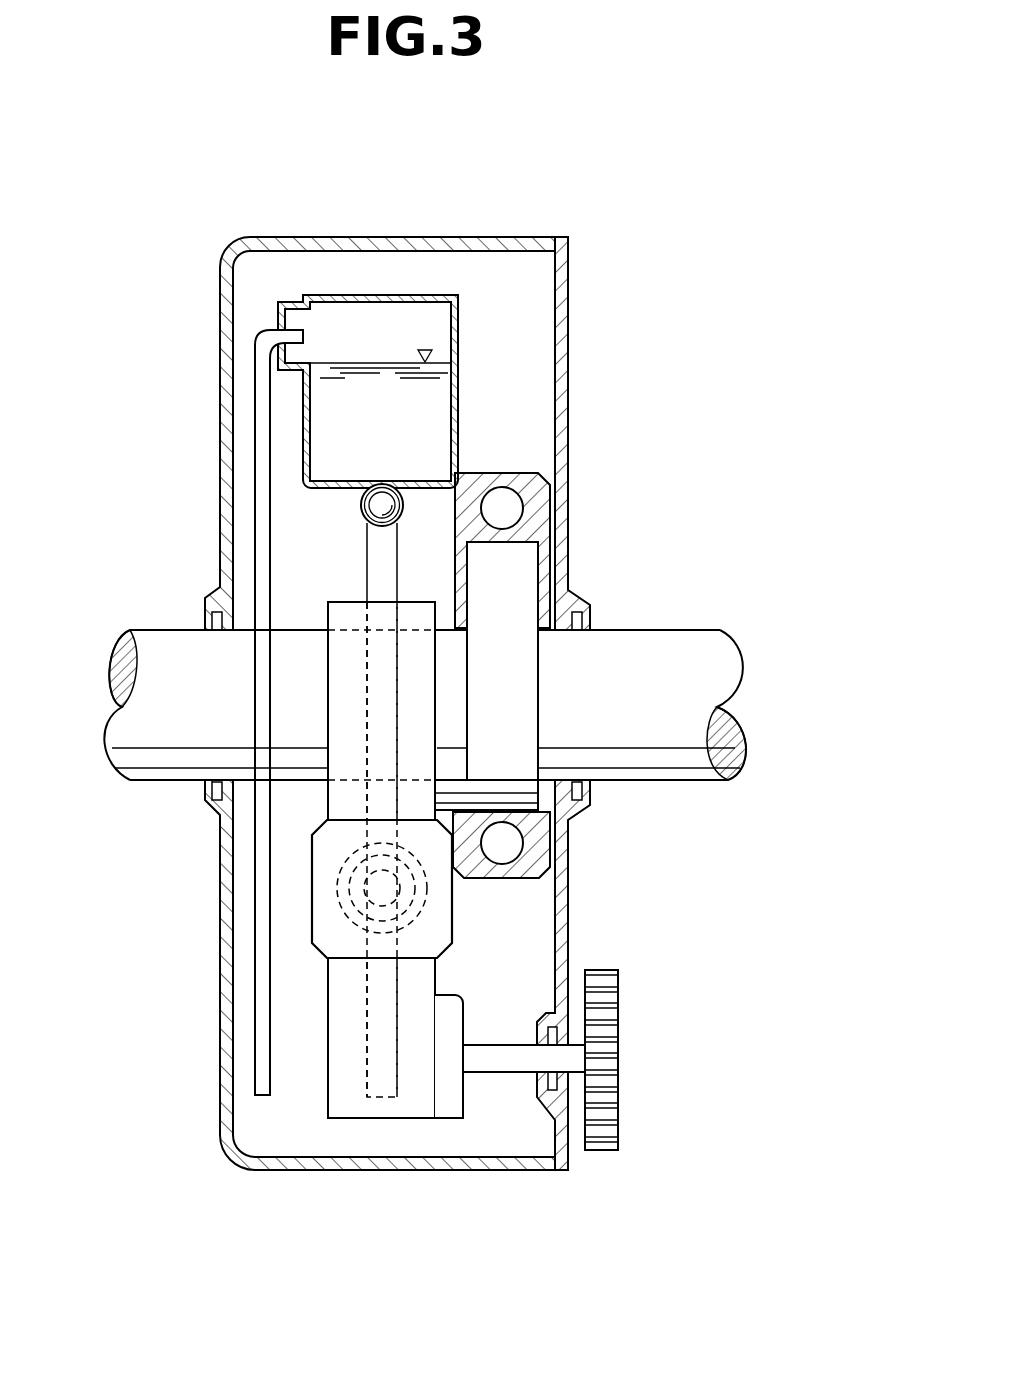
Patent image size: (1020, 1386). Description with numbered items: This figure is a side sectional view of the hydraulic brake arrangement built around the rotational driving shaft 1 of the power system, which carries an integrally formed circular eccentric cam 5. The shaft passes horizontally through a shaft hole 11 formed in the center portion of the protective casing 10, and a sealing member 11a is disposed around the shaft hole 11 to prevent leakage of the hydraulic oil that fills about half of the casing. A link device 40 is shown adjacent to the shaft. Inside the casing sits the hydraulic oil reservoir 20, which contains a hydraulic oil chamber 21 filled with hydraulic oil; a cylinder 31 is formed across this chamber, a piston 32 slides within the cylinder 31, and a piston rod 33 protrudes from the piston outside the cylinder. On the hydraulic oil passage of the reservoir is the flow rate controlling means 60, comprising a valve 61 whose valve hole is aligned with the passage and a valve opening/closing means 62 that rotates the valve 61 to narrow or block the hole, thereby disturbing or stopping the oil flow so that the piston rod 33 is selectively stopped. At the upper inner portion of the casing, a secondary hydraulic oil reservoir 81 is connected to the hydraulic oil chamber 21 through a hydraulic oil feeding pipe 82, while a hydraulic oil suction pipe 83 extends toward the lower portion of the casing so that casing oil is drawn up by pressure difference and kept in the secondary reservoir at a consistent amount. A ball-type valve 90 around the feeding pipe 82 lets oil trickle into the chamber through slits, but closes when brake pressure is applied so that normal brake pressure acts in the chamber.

The rotational driving shaft 1 is at (722, 660).
The circular eccentric cam 5 is at (522, 578).
The protective casing 10 is at (395, 240).
The shaft hole 11 is at (206, 770).
The sealing member 11a is at (216, 795).
The hydraulic oil reservoir 20 is at (335, 1104).
The hydraulic oil chamber 21 is at (372, 1043).
The cylinder 31 is at (445, 912).
The piston 32 is at (345, 888).
The piston rod 33 is at (382, 905).
The link device 40 is at (540, 503).
The flow rate controlling means 60 is at (532, 1149).
The valve 61 is at (450, 1110).
The valve opening/closing means 62 is at (603, 1124).
The secondary hydraulic oil reservoir 81 is at (460, 338).
The hydraulic oil feeding pipe 82 is at (373, 578).
The hydraulic oil suction pipe 83 is at (262, 443).
The valve 90 is at (363, 508).